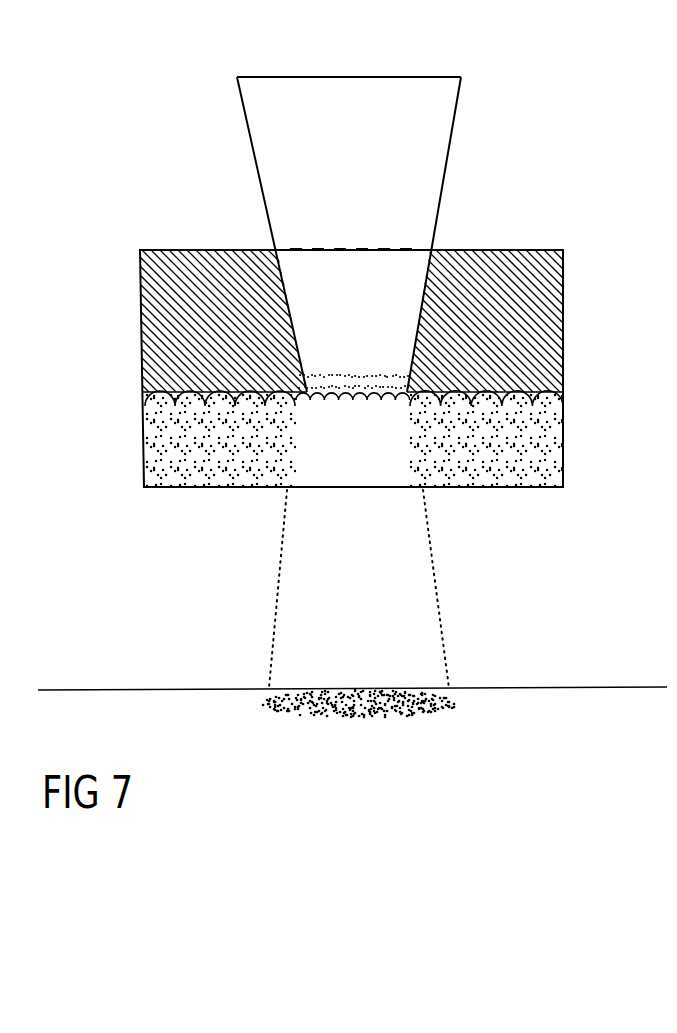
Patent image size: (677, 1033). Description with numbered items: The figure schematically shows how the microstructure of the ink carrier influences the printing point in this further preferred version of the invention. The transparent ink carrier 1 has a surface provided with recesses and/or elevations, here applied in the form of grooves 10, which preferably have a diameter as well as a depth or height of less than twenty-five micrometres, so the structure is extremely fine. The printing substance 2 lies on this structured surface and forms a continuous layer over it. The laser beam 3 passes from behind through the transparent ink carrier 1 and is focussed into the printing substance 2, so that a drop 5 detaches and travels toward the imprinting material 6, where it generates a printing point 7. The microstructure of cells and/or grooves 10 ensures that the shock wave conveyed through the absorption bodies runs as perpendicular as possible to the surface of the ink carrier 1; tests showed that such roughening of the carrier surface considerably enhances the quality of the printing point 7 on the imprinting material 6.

The ink carrier 1 is at (210, 260).
The printing substance 2 is at (212, 480).
The laser beam 3 is at (387, 117).
The drop 5 is at (383, 525).
The imprinting material 6 is at (513, 703).
The printing point 7 is at (370, 718).
The grooves 10 is at (473, 400).